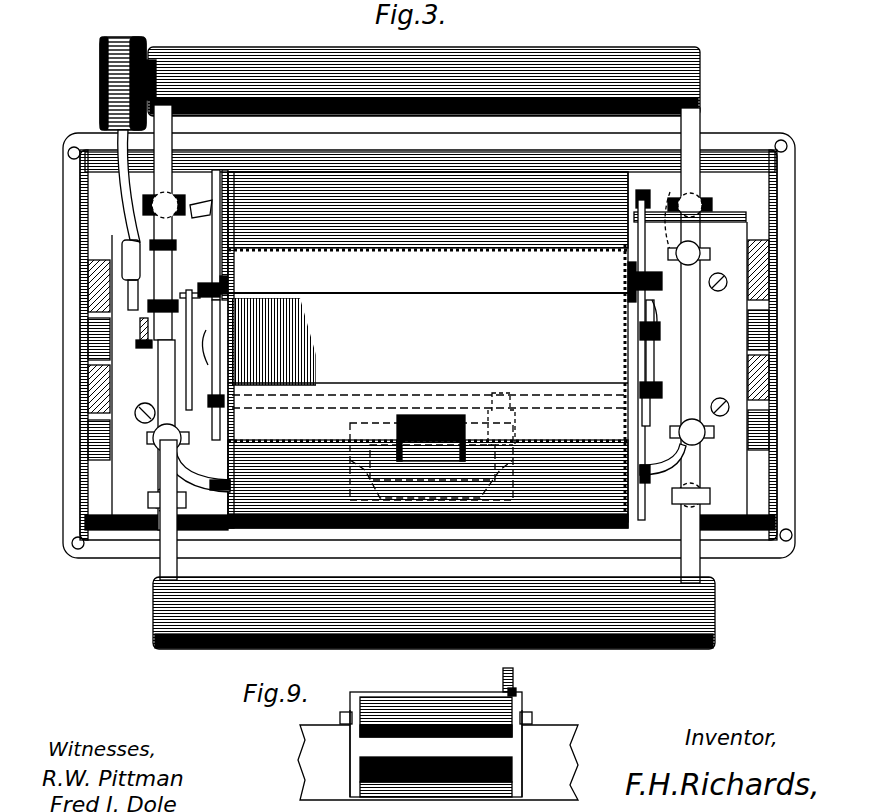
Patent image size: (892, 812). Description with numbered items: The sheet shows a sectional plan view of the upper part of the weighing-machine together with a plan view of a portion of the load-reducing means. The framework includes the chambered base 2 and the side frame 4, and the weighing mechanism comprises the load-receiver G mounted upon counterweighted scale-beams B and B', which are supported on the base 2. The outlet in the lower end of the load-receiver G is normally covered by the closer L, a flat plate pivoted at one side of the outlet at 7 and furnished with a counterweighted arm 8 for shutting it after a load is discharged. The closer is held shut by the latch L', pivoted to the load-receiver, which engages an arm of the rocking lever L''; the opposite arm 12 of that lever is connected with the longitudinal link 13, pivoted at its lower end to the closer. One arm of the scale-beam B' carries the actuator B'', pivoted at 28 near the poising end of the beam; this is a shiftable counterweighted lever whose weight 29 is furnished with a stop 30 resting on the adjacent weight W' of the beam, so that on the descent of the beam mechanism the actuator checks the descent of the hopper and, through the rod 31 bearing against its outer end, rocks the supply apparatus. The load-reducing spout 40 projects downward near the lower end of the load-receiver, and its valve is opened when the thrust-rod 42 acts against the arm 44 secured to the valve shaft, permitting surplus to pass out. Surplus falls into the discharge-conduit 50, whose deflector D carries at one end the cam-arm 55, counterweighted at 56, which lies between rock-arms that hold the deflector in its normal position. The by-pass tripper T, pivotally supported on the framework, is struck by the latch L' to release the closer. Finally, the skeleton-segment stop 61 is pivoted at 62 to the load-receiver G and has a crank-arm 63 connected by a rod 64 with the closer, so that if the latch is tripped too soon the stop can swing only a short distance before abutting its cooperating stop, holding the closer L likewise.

In FIG. 3, the chambered base 2 is at (770, 280).
In FIG. 3, the side frame 4 is at (90, 292).
In FIG. 3, the weight of the beam W' is at (424, 72).
In FIG. 3, the weight 29 is at (119, 46).
In FIG. 3, the stop 30 is at (153, 85).
In FIG. 3, the scale-beam B' is at (170, 222).
In FIG. 3, the actuator B'' is at (117, 186).
In FIG. 3, the pivotal point 28 is at (126, 242).
In FIG. 3, the link or rod 31 is at (141, 325).
In FIG. 3, the stop 61 is at (214, 190).
In FIG. 3, the crank-arm 63 is at (207, 283).
In FIG. 3, the pivot 62 is at (232, 286).
In FIG. 3, the load-receiver G is at (428, 350).
In FIG. 3, the pivot 7 is at (268, 360).
In FIG. 3, the load-reducing spout 40 is at (430, 415).
In FIG. 3, the counterweighted arm 8 is at (214, 436).
In FIG. 3, the rod 64 is at (206, 345).
In FIG. 3, the closer L is at (207, 370).
In FIG. 3, the scale-beam B is at (436, 345).
In FIG. 3, the by-pass tripper T is at (656, 210).
In FIG. 3, the arm 12 is at (646, 272).
In FIG. 3, the rocking lever L'' is at (617, 279).
In FIG. 3, the latch L' is at (629, 345).
In FIG. 3, the longitudinal link 13 is at (660, 318).
In FIG. 3, the thrust-rod 42 is at (645, 386).
In FIG. 3, the arm 44 is at (646, 424).
In FIG. 9, the deflector D is at (413, 700).
In FIG. 9, the discharge-conduit 50 is at (443, 752).
In FIG. 9, the counterweight 56 is at (512, 672).
In FIG. 9, the cam-arm 55 is at (514, 690).